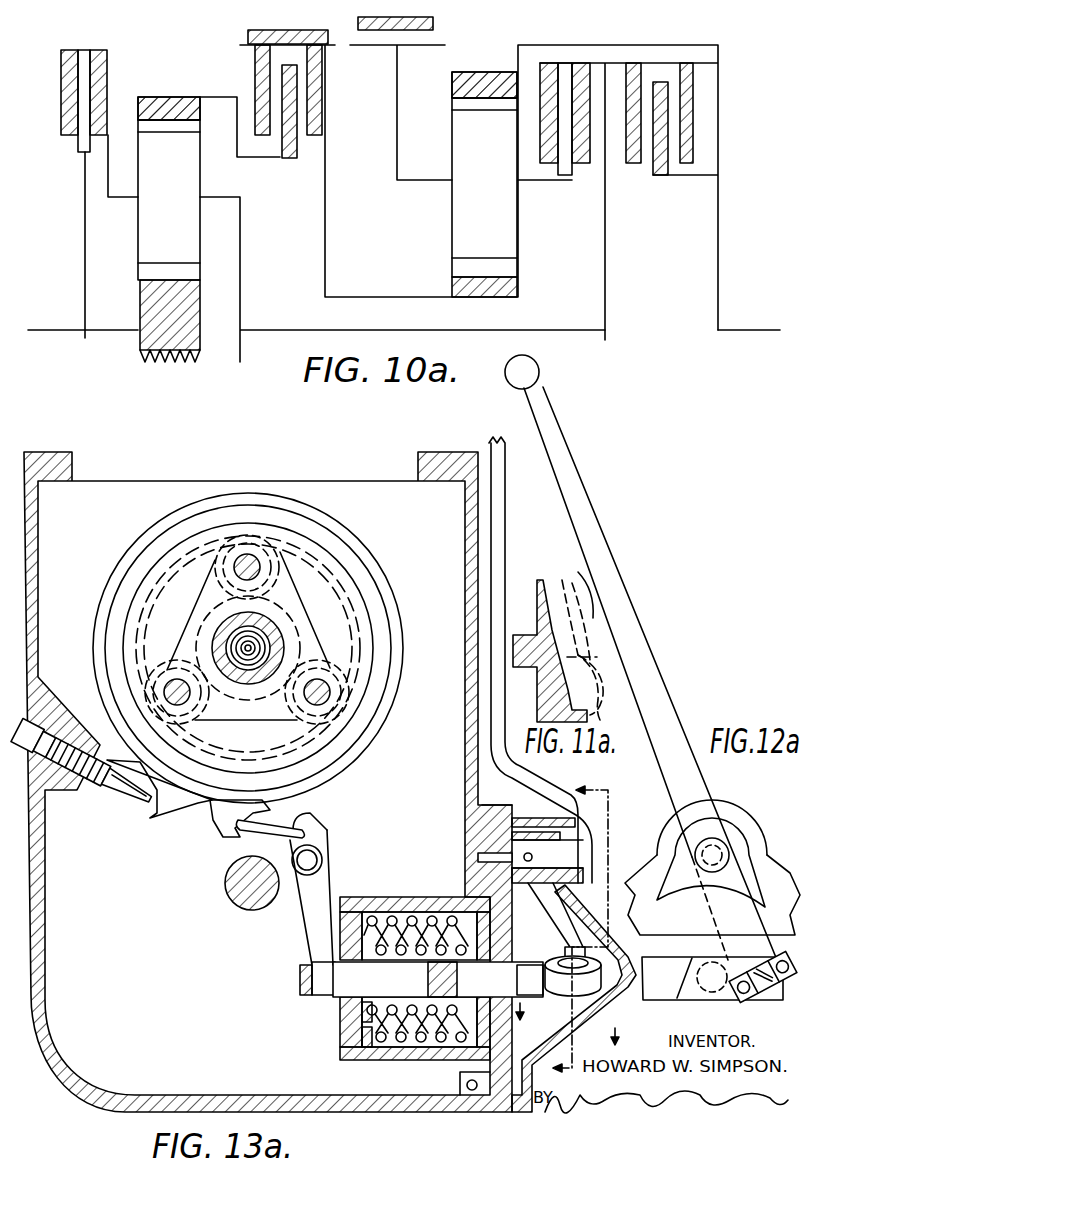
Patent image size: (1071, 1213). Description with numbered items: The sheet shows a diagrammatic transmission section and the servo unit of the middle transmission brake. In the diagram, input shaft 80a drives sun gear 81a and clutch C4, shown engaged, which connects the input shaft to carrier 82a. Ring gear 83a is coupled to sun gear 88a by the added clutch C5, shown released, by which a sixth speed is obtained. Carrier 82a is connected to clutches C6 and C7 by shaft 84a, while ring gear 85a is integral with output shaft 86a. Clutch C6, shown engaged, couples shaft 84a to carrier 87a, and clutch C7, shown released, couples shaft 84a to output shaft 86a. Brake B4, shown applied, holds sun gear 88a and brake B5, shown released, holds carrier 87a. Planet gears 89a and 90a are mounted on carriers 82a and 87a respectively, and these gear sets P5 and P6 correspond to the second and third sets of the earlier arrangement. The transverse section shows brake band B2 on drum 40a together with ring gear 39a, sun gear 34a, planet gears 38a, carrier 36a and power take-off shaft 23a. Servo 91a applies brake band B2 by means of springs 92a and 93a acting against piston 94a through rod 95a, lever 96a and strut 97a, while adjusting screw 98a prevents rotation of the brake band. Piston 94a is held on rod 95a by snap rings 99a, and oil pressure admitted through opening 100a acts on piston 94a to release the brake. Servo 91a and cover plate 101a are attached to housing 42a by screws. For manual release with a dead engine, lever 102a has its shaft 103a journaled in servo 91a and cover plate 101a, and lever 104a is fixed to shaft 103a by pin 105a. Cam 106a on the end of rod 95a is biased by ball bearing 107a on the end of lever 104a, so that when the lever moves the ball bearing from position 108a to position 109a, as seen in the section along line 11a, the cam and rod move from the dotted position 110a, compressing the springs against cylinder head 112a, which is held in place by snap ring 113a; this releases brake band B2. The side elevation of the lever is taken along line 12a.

In FIG. 10A, the clutch C4 is at (78, 50).
In FIG. 10A, the gear set P5 is at (190, 75).
In FIG. 10A, the brake B4 is at (262, 33).
In FIG. 10A, the clutch C5 is at (254, 72).
In FIG. 10A, the brake B5 is at (436, 22).
In FIG. 10A, the gear set P6 is at (510, 45).
In FIG. 10A, the clutch C6 is at (570, 63).
In FIG. 10A, the clutch C7 is at (685, 62).
In FIG. 10A, the input shaft 80a is at (83, 245).
In FIG. 10A, the sun gear 81a is at (140, 294).
In FIG. 10A, the carrier 82a is at (125, 199).
In FIG. 10A, the ring gear 83a is at (180, 78).
In FIG. 10A, the shaft 84a is at (297, 330).
In FIG. 10A, the ring gear 85a is at (453, 73).
In FIG. 10A, the output shaft 86a is at (762, 330).
In FIG. 10A, the carrier 87a is at (528, 182).
In FIG. 10A, the sun gear 88a is at (518, 273).
In FIG. 10A, the planet gears 89a is at (195, 176).
In FIG. 10A, the planet gears 90a is at (500, 154).
In FIG. 13A, the housing 42a is at (97, 460).
In FIG. 13A, the brake band B2 is at (347, 560).
In FIG. 13A, the ring gear 39a is at (357, 588).
In FIG. 13A, the drum 40a is at (396, 603).
In FIG. 13A, the carrier 36a is at (300, 635).
In FIG. 13A, the planet gears 38a is at (200, 592).
In FIG. 13A, the sun gear 34a is at (257, 703).
In FIG. 13A, the adjusting screw 98a is at (91, 778).
In FIG. 13A, the strut 97a is at (268, 837).
In FIG. 13A, the power take-off shaft 23a is at (236, 894).
In FIG. 13A, the lever 96a is at (300, 921).
In FIG. 13A, the rod 95a is at (300, 990).
In FIG. 13A, the servo 91a is at (422, 879).
In FIG. 13A, the spring 92a is at (382, 1060).
In FIG. 13A, the spring 93a is at (422, 1060).
In FIG. 13A, the piston 94a is at (490, 925).
In FIG. 13A, the snap rings 99a is at (423, 989).
In FIG. 13A, the opening 100a is at (470, 1089).
In FIG. 13A, the cover plate 101a is at (527, 804).
In FIG. 12A, the cover plate 101a is at (752, 835).
In FIG. 13A, the lever 102a is at (507, 513).
In FIG. 12A, the lever 102a is at (668, 690).
In FIG. 13A, the shaft 103a is at (495, 857).
In FIG. 13A, the lever 104a is at (562, 940).
In FIG. 13A, the pin 105a is at (558, 850).
In FIG. 13A, the cam 106a is at (565, 993).
In FIG. 11A, the cam 106a is at (590, 657).
In FIG. 12A, the cam 106a is at (662, 1000).
In FIG. 12A, the ball bearing 107a is at (790, 992).
In FIG. 11A, the position 108a is at (578, 572).
In FIG. 11A, the position 109a is at (600, 721).
In FIG. 11A, the dotted position 110a is at (572, 583).
In FIG. 13A, the cylinder head 112a is at (345, 1026).
In FIG. 13A, the snap ring 113a is at (350, 1046).
In FIG. 13A, the section line 11a is at (589, 1026).
In FIG. 13A, the section line 12a is at (583, 920).